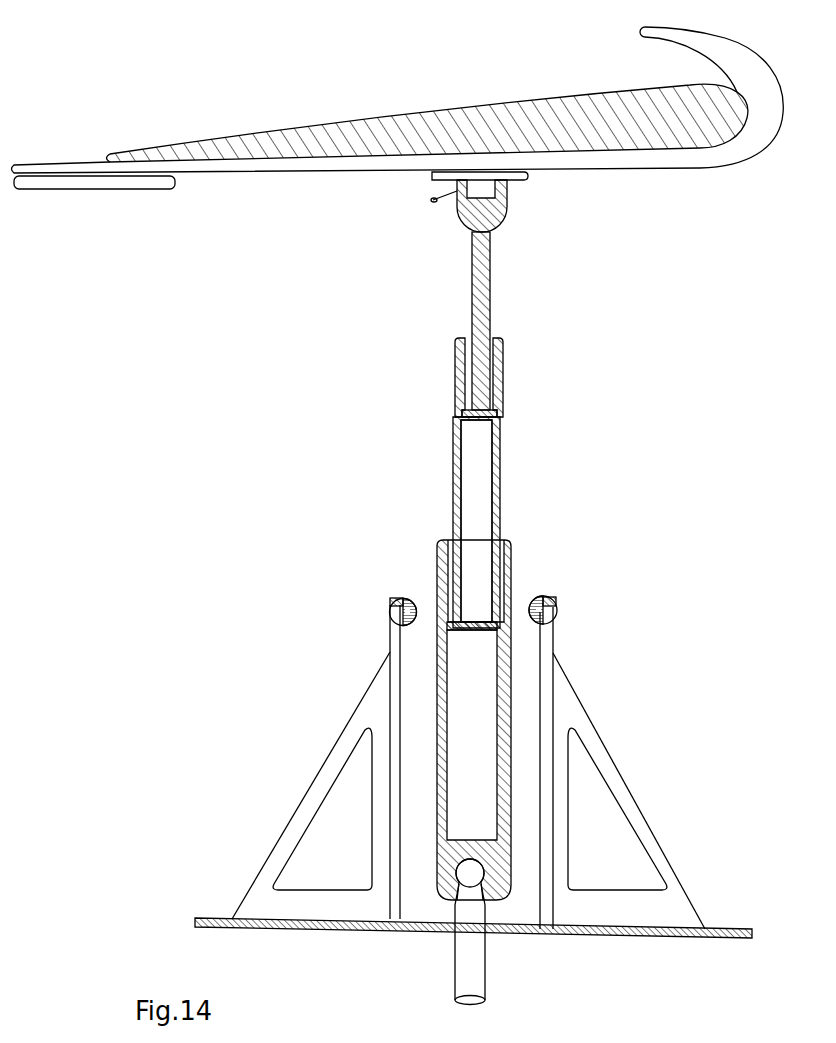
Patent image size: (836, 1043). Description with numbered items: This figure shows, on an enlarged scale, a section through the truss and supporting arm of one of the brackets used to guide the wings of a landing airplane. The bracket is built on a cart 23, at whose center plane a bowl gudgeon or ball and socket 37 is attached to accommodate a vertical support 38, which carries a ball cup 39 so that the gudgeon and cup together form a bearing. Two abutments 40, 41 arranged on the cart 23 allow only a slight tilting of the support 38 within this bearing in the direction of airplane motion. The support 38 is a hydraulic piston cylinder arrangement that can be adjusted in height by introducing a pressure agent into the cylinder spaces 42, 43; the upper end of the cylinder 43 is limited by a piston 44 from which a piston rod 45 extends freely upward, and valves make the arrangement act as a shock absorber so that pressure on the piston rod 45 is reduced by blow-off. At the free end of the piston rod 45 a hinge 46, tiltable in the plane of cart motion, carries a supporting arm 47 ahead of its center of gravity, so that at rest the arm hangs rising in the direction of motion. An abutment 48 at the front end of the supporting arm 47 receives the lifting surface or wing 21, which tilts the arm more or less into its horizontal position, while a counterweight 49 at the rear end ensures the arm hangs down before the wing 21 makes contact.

The lifting surface or wing 21 is at (318, 128).
The cart 23 is at (203, 917).
The bowl gudgeon (ball and socket) 37 is at (448, 951).
The vertical support 38 is at (505, 437).
The ball cup 39 is at (501, 897).
The abutment 40 is at (556, 600).
The abutment 41 is at (397, 597).
The cylinder space 42 is at (480, 805).
The cylinder space 43 is at (470, 512).
The piston 44 is at (502, 411).
The piston rod 45 is at (492, 293).
The hinge 46 is at (491, 208).
The supporting arm 47 is at (758, 138).
The abutment 48 is at (763, 88).
The counterweight 49 is at (48, 191).